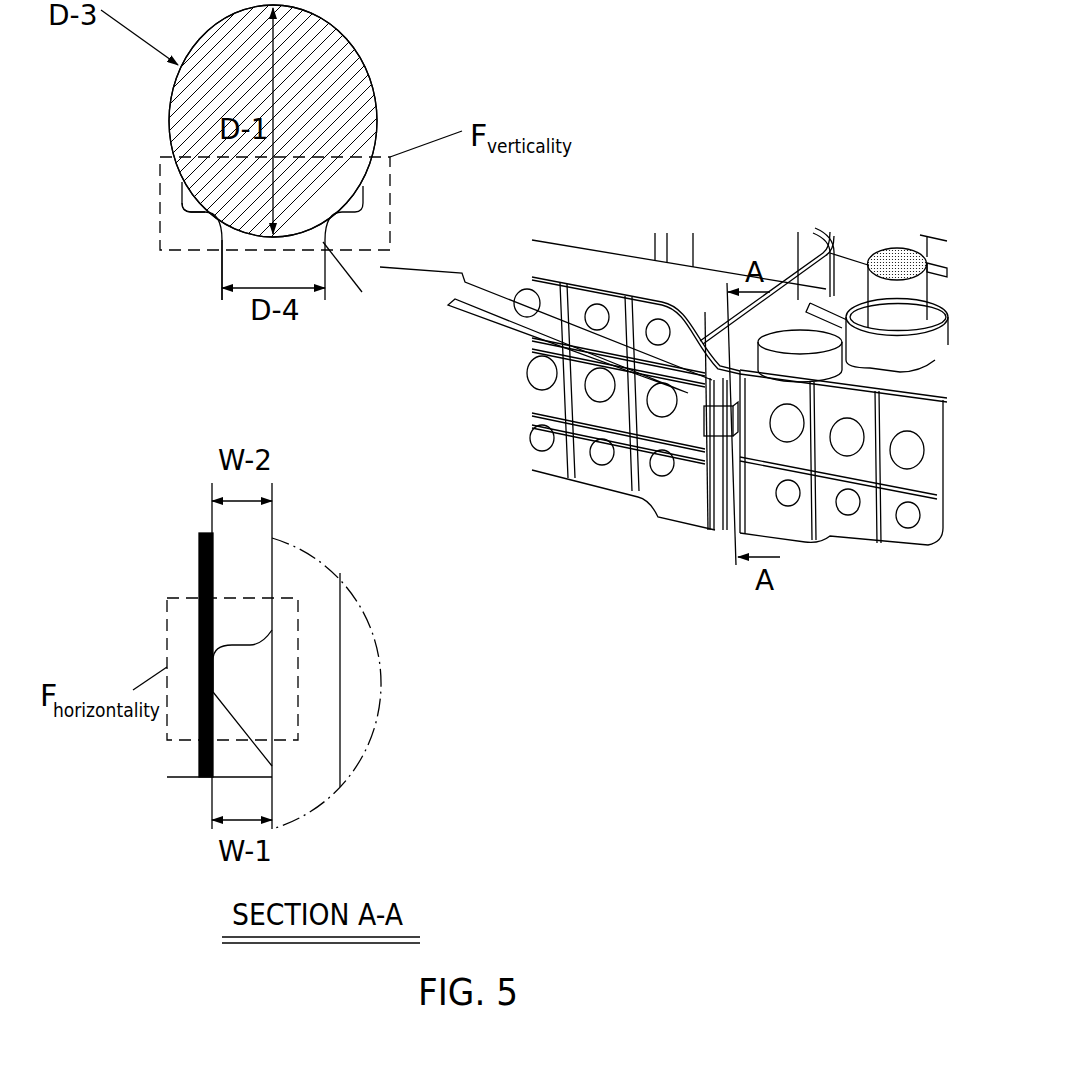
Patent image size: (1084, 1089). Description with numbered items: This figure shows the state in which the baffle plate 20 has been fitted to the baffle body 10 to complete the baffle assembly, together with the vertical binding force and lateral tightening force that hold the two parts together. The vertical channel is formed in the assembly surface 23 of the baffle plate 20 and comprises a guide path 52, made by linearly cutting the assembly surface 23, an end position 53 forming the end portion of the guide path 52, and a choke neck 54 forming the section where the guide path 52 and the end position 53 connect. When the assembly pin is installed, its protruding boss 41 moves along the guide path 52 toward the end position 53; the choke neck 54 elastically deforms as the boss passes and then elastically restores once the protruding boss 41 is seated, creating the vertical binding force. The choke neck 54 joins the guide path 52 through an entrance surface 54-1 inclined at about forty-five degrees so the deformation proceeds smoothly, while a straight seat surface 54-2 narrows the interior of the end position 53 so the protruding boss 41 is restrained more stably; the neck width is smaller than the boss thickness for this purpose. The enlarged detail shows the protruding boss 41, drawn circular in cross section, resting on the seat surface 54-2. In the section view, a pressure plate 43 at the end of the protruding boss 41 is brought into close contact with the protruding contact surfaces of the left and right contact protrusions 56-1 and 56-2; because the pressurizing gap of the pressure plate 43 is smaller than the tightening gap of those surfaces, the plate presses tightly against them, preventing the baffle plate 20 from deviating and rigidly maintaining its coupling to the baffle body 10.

The baffle body 10 is at (782, 248).
The baffle plate 20 is at (853, 503).
The assembly surface 23 is at (321, 690).
The protruding boss 41 is at (302, 93).
The pressure plate 43 is at (197, 567).
The guide path 52 is at (730, 507).
The end position 53 is at (172, 122).
The choke neck 54 is at (215, 217).
The entrance surface 54-1 is at (222, 243).
The seat surface 54-2 is at (187, 213).
The left contact protrusion 56-1 is at (247, 677).
The right contact protrusion 56-2 is at (369, 632).